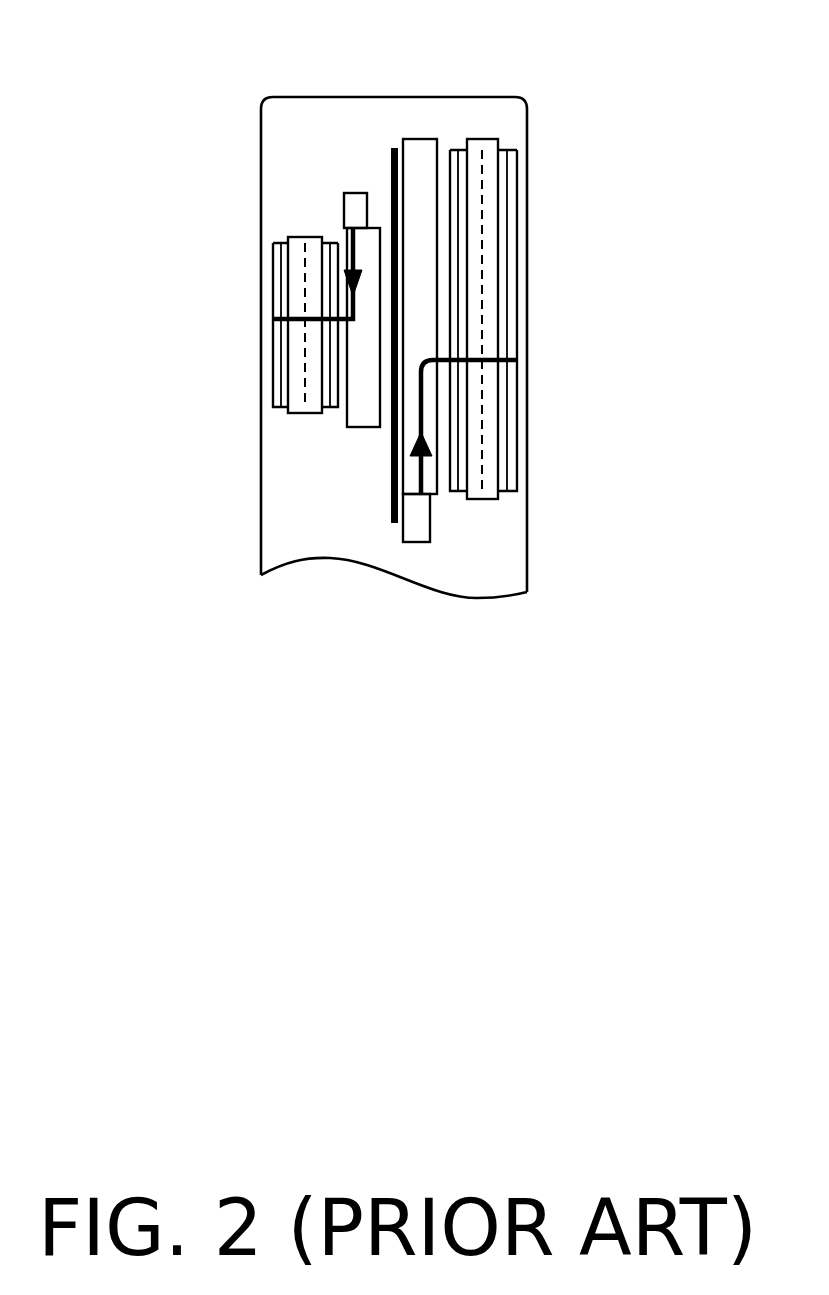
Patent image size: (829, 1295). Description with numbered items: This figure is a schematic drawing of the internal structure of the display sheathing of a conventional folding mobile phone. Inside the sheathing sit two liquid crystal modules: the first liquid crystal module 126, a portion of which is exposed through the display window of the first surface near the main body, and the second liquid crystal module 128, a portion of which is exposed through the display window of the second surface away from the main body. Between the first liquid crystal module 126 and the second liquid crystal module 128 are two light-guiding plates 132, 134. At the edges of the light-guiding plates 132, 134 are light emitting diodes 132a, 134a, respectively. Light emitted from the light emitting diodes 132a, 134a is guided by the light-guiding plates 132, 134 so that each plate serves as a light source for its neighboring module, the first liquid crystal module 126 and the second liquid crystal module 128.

The first liquid crystal module 126 is at (490, 148).
The second liquid crystal module 128 is at (300, 243).
The light-guiding plate 132 is at (418, 152).
The light emitting diode 132a is at (420, 522).
The light-guiding plate 134 is at (361, 413).
The light emitting diode 134a is at (357, 200).